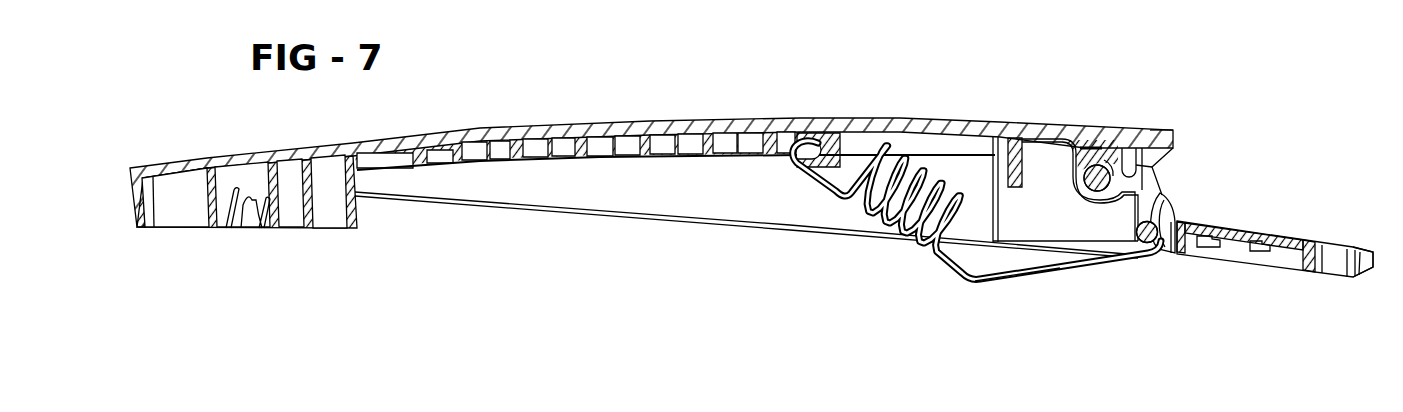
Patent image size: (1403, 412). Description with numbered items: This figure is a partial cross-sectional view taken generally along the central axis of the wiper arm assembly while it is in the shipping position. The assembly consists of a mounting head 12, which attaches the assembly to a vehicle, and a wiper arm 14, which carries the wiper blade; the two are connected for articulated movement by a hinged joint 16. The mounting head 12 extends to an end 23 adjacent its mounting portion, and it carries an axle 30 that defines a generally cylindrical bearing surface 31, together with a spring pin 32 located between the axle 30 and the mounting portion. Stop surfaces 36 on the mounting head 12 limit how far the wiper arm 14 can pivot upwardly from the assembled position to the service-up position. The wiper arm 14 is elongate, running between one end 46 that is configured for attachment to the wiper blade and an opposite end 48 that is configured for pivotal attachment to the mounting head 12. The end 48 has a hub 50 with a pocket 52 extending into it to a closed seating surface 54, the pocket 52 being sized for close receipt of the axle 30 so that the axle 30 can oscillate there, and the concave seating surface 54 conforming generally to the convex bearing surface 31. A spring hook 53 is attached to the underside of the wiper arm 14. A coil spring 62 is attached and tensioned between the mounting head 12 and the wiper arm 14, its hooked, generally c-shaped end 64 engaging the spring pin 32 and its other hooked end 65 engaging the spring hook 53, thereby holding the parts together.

The mounting head 12 is at (1356, 283).
The wiper arm 14 is at (910, 120).
The hinged joint 16 is at (1118, 95).
The end 23 is at (1373, 265).
The axle 30 is at (1133, 192).
The bearing surface 31 is at (1079, 203).
The spring pin 32 is at (1160, 256).
The stop surfaces 36 is at (1160, 197).
The end 46 is at (170, 228).
The end 48 is at (1170, 130).
The hub 50 is at (1192, 170).
The pocket 52 is at (1143, 177).
The spring hook 53 is at (807, 147).
The seating surface 54 is at (1107, 163).
The coil spring 62 is at (997, 274).
The end 64 is at (1166, 222).
The end 65 is at (797, 150).